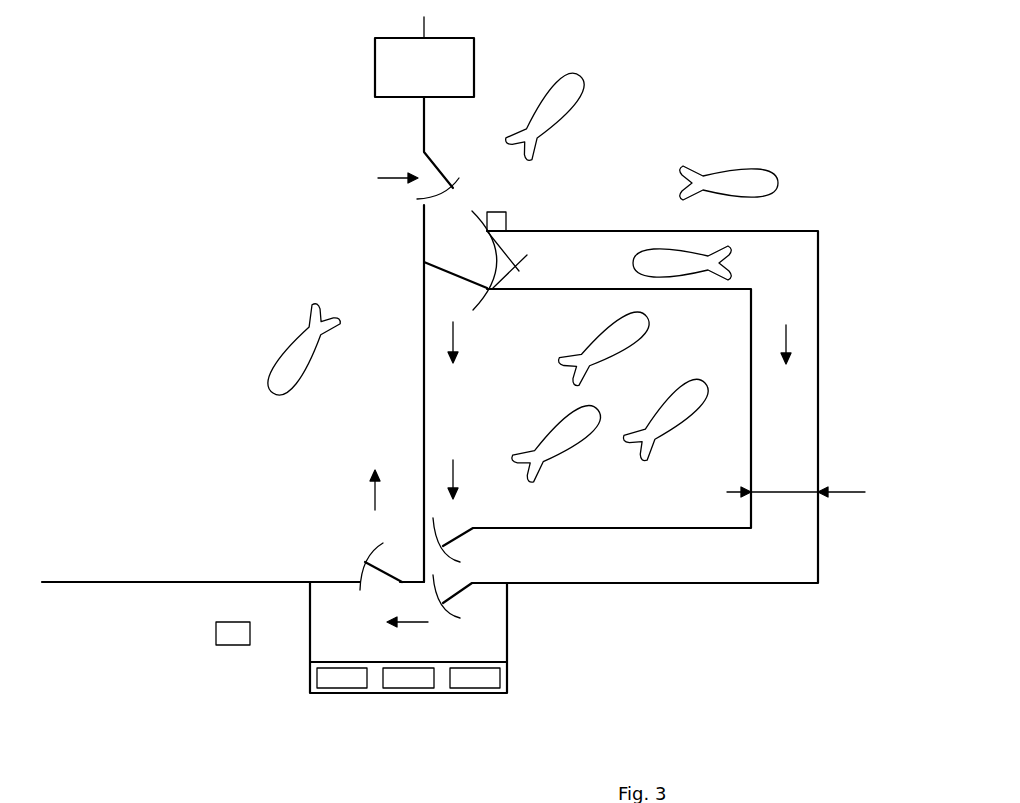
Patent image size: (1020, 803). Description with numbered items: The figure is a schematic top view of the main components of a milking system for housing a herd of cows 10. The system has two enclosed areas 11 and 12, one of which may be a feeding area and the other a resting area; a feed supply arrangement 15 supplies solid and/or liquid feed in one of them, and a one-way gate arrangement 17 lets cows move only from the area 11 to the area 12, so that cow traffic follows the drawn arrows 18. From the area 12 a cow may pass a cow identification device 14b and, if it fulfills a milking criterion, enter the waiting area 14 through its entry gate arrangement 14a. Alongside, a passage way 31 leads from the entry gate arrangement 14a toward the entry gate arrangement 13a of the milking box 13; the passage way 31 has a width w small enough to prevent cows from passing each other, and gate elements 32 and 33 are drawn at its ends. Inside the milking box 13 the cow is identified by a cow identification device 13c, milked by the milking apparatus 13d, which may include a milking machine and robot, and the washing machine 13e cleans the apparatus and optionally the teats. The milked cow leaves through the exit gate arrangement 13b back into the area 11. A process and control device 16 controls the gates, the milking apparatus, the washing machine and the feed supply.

The cows 10 is at (577, 100).
The enclosed area 11 is at (240, 98).
The enclosed area 12 is at (688, 95).
The milking box 13 is at (507, 628).
The entry gate arrangement 13a is at (460, 590).
The exit gate arrangement 13b is at (387, 570).
The cow identification device 13c is at (340, 689).
The milking apparatus 13d is at (478, 689).
The washing machine 13e is at (408, 689).
The waiting area 14 is at (522, 348).
The entry gate arrangement 14a is at (452, 270).
The cow identification device 14b is at (507, 218).
The feed supply arrangement 15 is at (474, 61).
The process and control device 16 is at (233, 633).
The one-way gate arrangement 17 is at (445, 170).
The arrows 18 is at (398, 178).
The passage way 31 is at (797, 277).
The curved guide vane 32 is at (526, 255).
The guide vane 33 is at (462, 538).
The width w is at (796, 484).